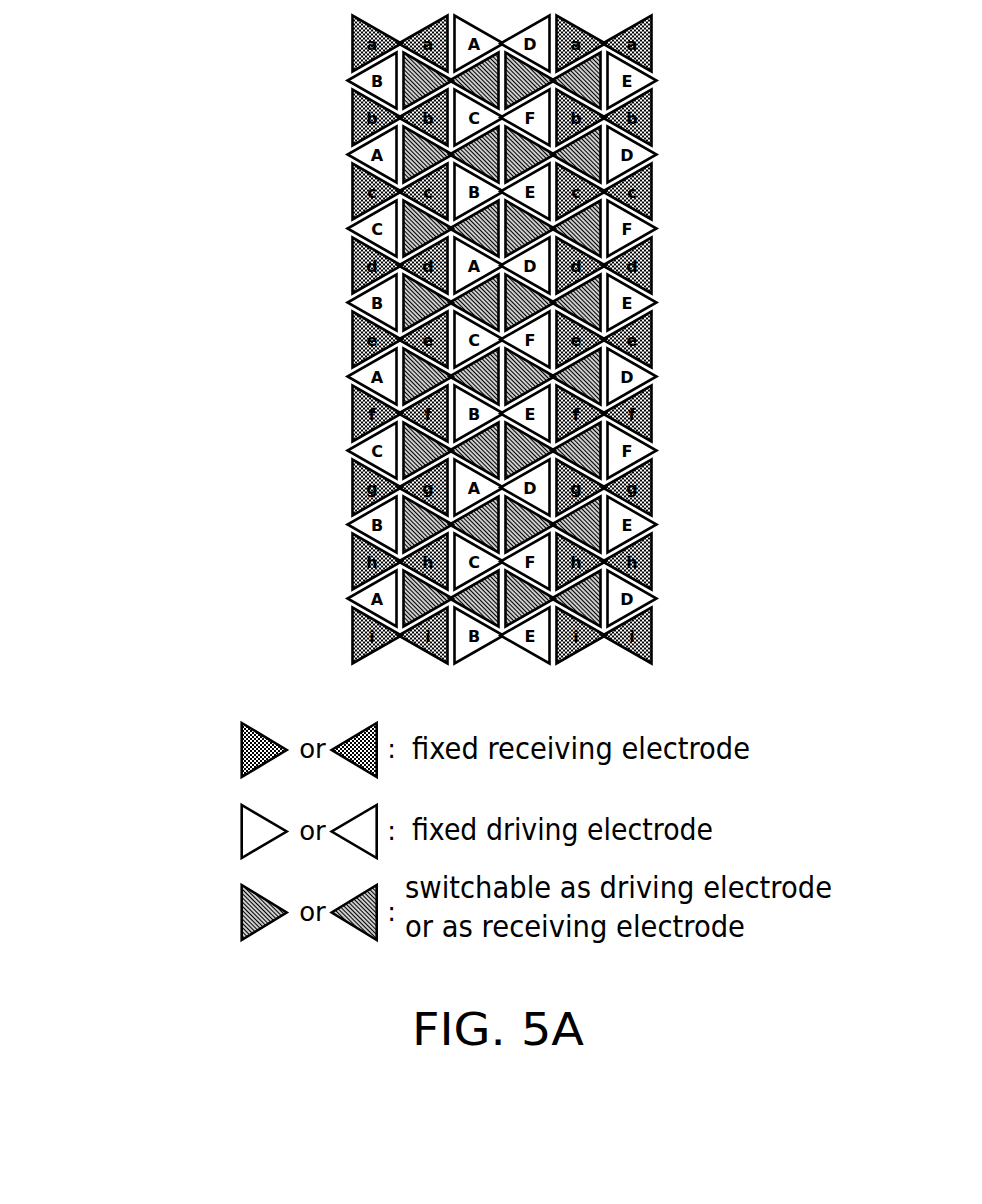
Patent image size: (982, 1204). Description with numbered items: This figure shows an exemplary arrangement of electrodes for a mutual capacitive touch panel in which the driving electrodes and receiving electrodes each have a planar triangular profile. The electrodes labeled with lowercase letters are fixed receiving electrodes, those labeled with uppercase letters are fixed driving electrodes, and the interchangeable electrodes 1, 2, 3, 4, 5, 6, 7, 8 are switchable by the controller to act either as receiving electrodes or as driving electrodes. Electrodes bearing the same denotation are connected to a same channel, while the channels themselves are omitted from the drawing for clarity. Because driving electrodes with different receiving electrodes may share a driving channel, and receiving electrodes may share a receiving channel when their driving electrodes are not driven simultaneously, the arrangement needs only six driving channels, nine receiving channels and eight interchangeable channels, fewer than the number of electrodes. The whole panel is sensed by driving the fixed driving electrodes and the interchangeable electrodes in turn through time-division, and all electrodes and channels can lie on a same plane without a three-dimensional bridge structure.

The interchangeable electrode 1 is at (502, 155).
The interchangeable electrode 2 is at (502, 229).
The interchangeable electrode 3 is at (502, 303).
The interchangeable electrode 4 is at (502, 377).
The interchangeable electrode 5 is at (502, 451).
The interchangeable electrode 6 is at (502, 525).
The interchangeable electrode 7 is at (502, 303).
The interchangeable electrode 8 is at (502, 377).